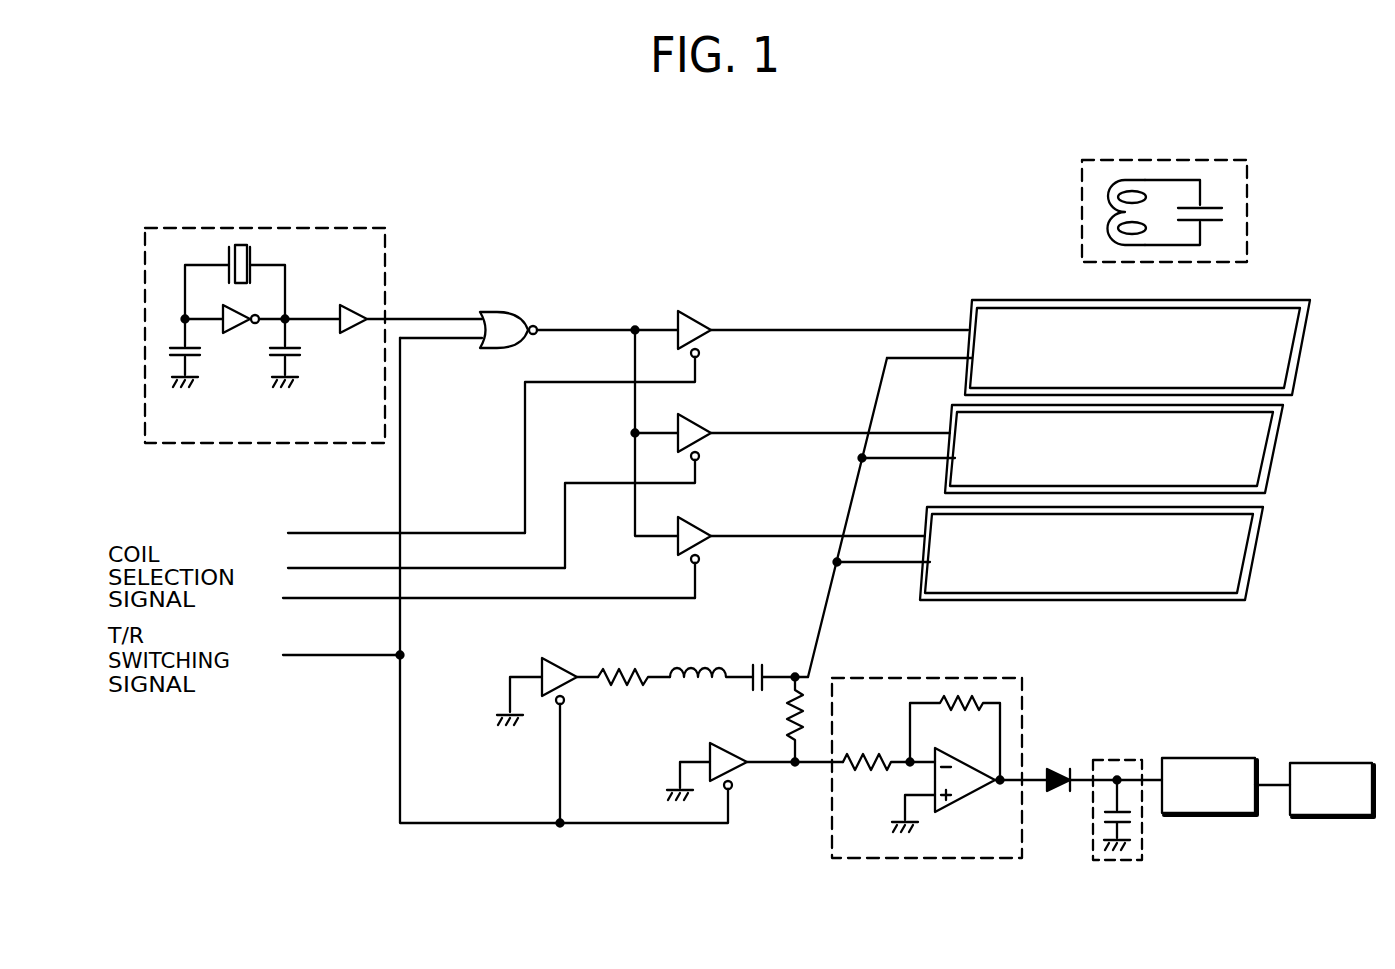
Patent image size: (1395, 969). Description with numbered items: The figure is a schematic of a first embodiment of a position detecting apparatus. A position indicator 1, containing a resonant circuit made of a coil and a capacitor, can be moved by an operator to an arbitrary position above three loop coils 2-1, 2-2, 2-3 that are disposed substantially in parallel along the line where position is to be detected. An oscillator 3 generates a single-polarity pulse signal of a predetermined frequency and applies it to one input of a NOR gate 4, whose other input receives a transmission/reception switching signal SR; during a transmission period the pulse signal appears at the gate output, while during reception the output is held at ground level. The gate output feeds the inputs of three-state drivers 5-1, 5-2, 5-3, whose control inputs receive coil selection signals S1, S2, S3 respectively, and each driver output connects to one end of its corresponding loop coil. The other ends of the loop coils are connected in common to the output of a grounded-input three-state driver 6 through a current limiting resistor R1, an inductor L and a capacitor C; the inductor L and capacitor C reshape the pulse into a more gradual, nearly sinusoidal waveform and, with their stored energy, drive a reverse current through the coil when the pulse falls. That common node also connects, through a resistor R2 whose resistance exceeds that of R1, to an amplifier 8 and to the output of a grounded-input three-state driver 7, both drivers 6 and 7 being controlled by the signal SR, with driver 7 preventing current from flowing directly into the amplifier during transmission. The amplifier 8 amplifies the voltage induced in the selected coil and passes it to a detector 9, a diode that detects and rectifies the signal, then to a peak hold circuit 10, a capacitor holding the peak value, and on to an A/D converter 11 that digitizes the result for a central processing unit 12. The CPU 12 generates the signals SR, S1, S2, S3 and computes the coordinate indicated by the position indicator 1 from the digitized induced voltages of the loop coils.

The position indicator 1 is at (1113, 160).
The loop coil 2-1 is at (1300, 360).
The loop coil 2-2 is at (1283, 450).
The loop coil 2-3 is at (1258, 558).
The oscillator 3 is at (337, 226).
The NOR gate 4 is at (506, 313).
The three-state driver 5-1 is at (713, 312).
The three-state driver 5-2 is at (713, 424).
The three-state driver 5-3 is at (713, 525).
The three-state driver 6 is at (565, 656).
The three-state driver 7 is at (735, 768).
The amplifier 8 is at (1003, 678).
The detector 9 is at (1052, 764).
The peak hold circuit 10 is at (1119, 760).
The A/D converter 11 is at (1206, 758).
The central processing unit 12 is at (1333, 763).
The resistor R1 is at (634, 660).
The inductor L is at (711, 656).
The capacitor C is at (778, 662).
The resistor R2 is at (772, 719).
The coil selection signal S1 is at (385, 535).
The coil selection signal S2 is at (405, 570).
The coil selection signal S3 is at (470, 599).
The transmission/reception switching signal SR is at (323, 657).